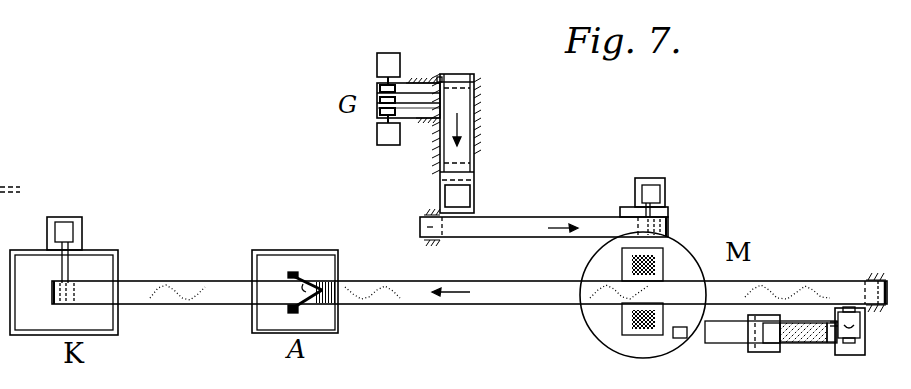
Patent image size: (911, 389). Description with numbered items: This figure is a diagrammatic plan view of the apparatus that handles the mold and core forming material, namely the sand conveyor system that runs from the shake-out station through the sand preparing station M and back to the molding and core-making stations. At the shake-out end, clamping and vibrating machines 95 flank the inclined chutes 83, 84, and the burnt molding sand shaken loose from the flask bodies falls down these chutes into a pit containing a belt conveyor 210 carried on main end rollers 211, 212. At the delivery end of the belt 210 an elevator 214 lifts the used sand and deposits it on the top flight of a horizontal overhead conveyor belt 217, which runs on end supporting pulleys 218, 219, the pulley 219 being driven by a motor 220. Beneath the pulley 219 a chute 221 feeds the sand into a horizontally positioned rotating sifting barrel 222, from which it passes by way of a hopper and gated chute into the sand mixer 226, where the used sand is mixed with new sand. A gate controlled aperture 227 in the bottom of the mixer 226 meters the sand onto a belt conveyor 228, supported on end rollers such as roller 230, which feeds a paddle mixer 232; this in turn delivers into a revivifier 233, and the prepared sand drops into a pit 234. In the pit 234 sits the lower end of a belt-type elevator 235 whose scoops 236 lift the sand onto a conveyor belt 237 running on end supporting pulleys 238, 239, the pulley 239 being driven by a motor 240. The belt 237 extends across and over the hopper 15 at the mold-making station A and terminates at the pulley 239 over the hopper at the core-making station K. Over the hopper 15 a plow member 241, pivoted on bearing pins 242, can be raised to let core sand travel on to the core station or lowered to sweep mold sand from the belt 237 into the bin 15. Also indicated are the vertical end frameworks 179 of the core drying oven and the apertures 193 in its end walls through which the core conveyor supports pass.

The hopper 15 is at (327, 322).
The chute 83 is at (414, 118).
The chute 84 is at (406, 90).
The clamping and vibrating machine 95 is at (390, 62).
The vertical end framework 179 is at (0, 219).
The aperture 193 is at (0, 361).
The conveyor 210 is at (468, 142).
The main end roller 211 is at (463, 73).
The main end roller 212 is at (470, 160).
The elevator 214 is at (465, 192).
The overhead conveyor belt 217 is at (517, 222).
The end supporting pulley 218 is at (421, 227).
The end supporting pulley 219 is at (669, 222).
The motor 220 is at (652, 192).
The chute 221 is at (666, 210).
The sifting barrel 222 is at (632, 328).
The sand mixer 226 is at (593, 317).
The gate controlled aperture 227 is at (680, 340).
The belt conveyor 228 is at (727, 341).
The end roller 230 is at (762, 351).
The paddle mixer 232 is at (800, 343).
The revivifier 233 is at (838, 344).
The pit 234 is at (860, 352).
The elevator 235 is at (838, 318).
The scoop 236 is at (839, 306).
The conveyor belt 237 is at (503, 294).
The end supporting pulley 238 is at (888, 310).
The end supporting pulley 239 is at (80, 277).
The motor 240 is at (68, 232).
The plow member 241 is at (303, 290).
The bearing pin 242 is at (292, 270).